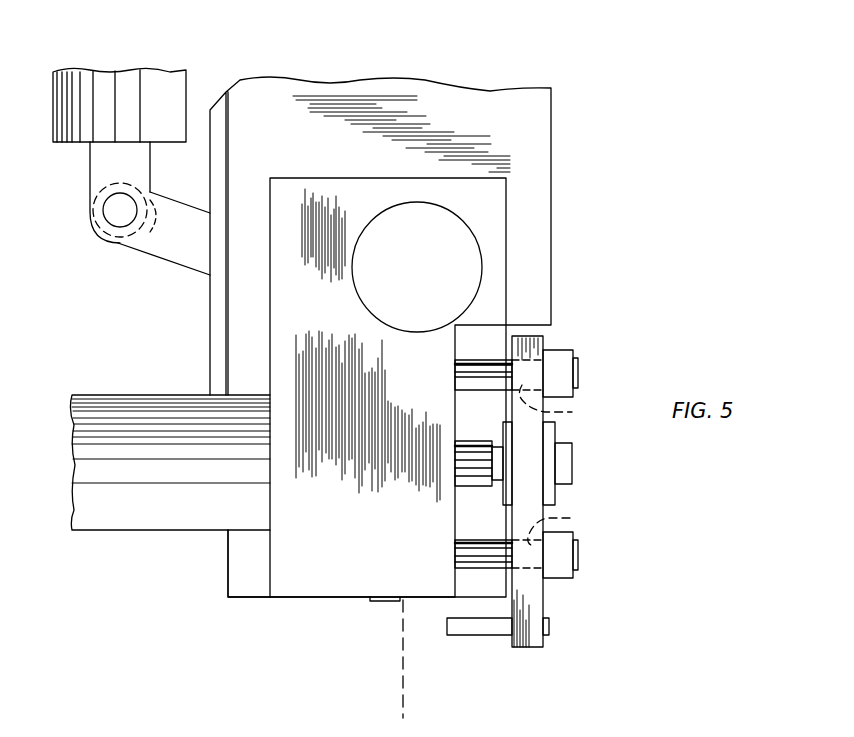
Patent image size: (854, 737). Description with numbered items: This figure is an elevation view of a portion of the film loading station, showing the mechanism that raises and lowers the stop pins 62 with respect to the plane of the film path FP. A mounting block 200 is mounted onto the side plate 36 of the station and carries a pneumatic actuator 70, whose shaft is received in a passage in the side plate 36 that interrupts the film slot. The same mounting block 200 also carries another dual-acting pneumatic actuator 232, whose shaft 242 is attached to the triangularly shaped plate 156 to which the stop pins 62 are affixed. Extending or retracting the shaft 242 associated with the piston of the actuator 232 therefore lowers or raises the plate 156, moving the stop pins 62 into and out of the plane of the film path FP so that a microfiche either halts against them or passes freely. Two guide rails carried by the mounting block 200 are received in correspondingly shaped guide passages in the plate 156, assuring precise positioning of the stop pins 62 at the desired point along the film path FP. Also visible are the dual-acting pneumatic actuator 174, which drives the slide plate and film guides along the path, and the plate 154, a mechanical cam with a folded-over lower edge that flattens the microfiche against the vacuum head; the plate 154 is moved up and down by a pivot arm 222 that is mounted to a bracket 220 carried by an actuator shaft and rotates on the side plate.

The side plate 36 is at (246, 582).
The stop pins 62 is at (470, 625).
The pneumatic actuator 70 is at (432, 256).
The plate 154 is at (210, 345).
The plate 156 is at (537, 640).
The dual-acting pneumatic actuator 174 is at (168, 82).
The mounting block 200 is at (302, 190).
The bracket 220 is at (100, 172).
The pivot arm 222 is at (165, 245).
The dual-acting pneumatic actuator 232 is at (165, 512).
The shaft 242 is at (465, 468).
The film path FP is at (400, 652).